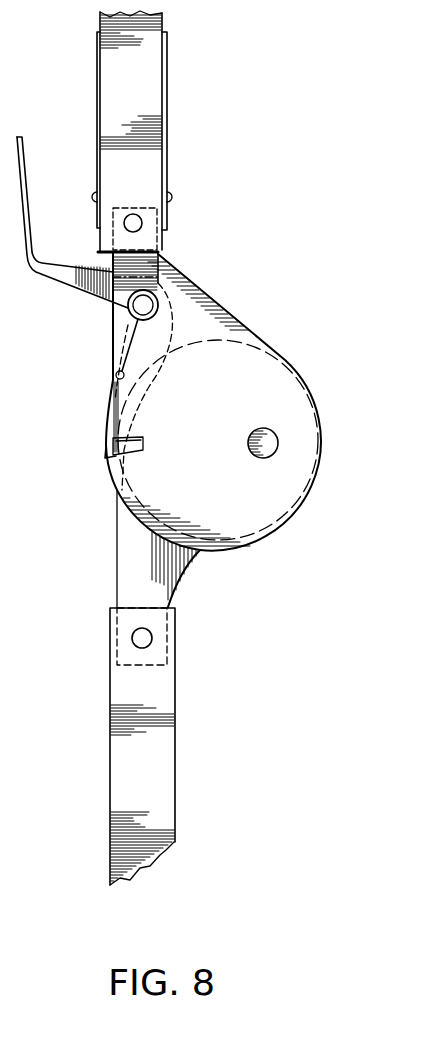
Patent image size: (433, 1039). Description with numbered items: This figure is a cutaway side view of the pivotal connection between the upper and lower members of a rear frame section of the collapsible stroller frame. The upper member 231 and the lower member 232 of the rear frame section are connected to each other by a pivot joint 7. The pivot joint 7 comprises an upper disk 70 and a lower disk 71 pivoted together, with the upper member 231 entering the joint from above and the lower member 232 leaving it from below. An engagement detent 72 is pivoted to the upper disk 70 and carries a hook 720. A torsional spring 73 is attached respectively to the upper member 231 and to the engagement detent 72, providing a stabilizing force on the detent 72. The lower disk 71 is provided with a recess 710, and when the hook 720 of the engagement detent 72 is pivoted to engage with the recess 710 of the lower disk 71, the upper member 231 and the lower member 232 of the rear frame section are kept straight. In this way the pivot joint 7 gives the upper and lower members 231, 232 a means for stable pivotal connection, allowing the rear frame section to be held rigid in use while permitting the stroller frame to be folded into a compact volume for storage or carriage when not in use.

The upper member 231 is at (146, 74).
The lower member 232 is at (164, 750).
The pivot joint 7 is at (328, 410).
The upper disk 70 is at (218, 323).
The lower disk 71 is at (162, 582).
The engagement detent 72 is at (82, 280).
The torsional spring 73 is at (163, 260).
The recess 710 is at (143, 438).
The hook 720 is at (105, 452).